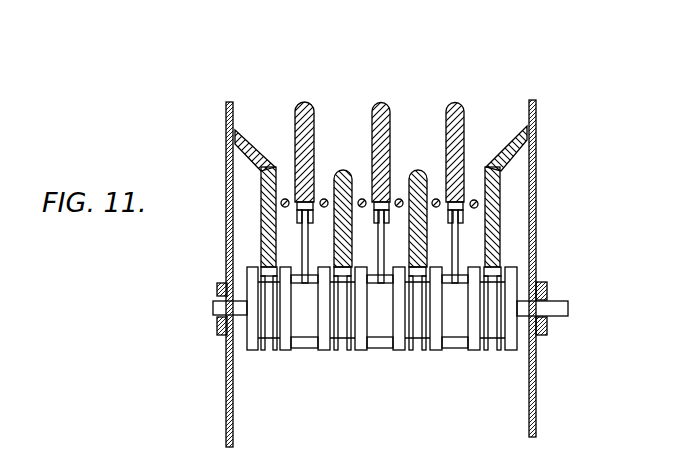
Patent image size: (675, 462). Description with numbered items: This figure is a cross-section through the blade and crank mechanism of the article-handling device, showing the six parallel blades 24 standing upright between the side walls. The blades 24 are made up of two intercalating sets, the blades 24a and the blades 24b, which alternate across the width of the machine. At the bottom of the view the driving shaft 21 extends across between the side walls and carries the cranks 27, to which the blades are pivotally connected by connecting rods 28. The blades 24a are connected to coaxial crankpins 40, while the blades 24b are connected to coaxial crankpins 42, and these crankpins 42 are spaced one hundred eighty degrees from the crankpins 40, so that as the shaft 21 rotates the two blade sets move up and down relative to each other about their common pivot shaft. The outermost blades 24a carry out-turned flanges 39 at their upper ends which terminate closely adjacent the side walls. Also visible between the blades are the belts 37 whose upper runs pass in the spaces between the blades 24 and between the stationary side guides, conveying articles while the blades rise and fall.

The driving shaft 21 is at (556, 307).
The blades 24 is at (382, 152).
The blades of first set 24a is at (261, 179).
The blades of second set 24b is at (303, 102).
The cranks 27 is at (342, 344).
The connecting rods 28 is at (456, 240).
The belts 37 is at (281, 205).
The out-turned flanges 39 is at (248, 142).
The crankpins 40 is at (263, 342).
The crankpins 42 is at (298, 282).